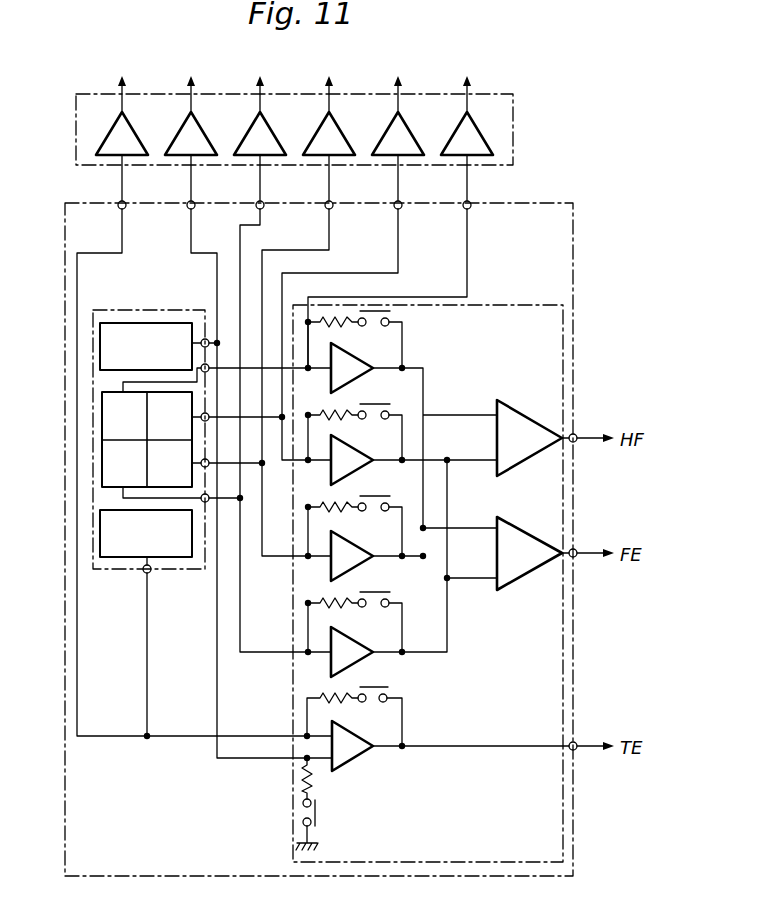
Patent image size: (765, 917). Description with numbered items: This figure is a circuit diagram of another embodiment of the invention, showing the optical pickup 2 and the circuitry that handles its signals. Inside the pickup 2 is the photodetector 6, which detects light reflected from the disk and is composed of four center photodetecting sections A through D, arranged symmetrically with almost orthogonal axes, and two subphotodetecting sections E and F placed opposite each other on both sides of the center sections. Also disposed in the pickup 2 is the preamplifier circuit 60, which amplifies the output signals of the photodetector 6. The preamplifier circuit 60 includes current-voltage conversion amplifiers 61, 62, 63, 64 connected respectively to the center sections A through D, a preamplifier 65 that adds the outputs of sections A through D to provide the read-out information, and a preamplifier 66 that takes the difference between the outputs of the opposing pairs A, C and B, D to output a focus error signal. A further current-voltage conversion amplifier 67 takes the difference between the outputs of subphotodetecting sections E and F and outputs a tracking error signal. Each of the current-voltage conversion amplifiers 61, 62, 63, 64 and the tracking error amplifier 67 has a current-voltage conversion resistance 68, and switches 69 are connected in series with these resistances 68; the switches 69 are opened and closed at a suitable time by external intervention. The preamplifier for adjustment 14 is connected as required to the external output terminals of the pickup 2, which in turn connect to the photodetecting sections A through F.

The optical pickup 2 is at (573, 252).
The photodetector 6 is at (155, 310).
The preamplifier for adjustment 14 is at (513, 112).
The preamplifier circuit 60 is at (563, 333).
The current-voltage conversion amplifier 61 is at (370, 358).
The current-voltage conversion amplifier 62 is at (372, 454).
The current-voltage conversion amplifier 63 is at (373, 545).
The current-voltage conversion amplifier 64 is at (373, 642).
The preamplifier 65 is at (522, 416).
The preamplifier 66 is at (522, 538).
The current-voltage conversion amplifier 67 is at (362, 757).
The current-voltage conversion resistance 68 is at (340, 321).
The switch 69 is at (387, 312).